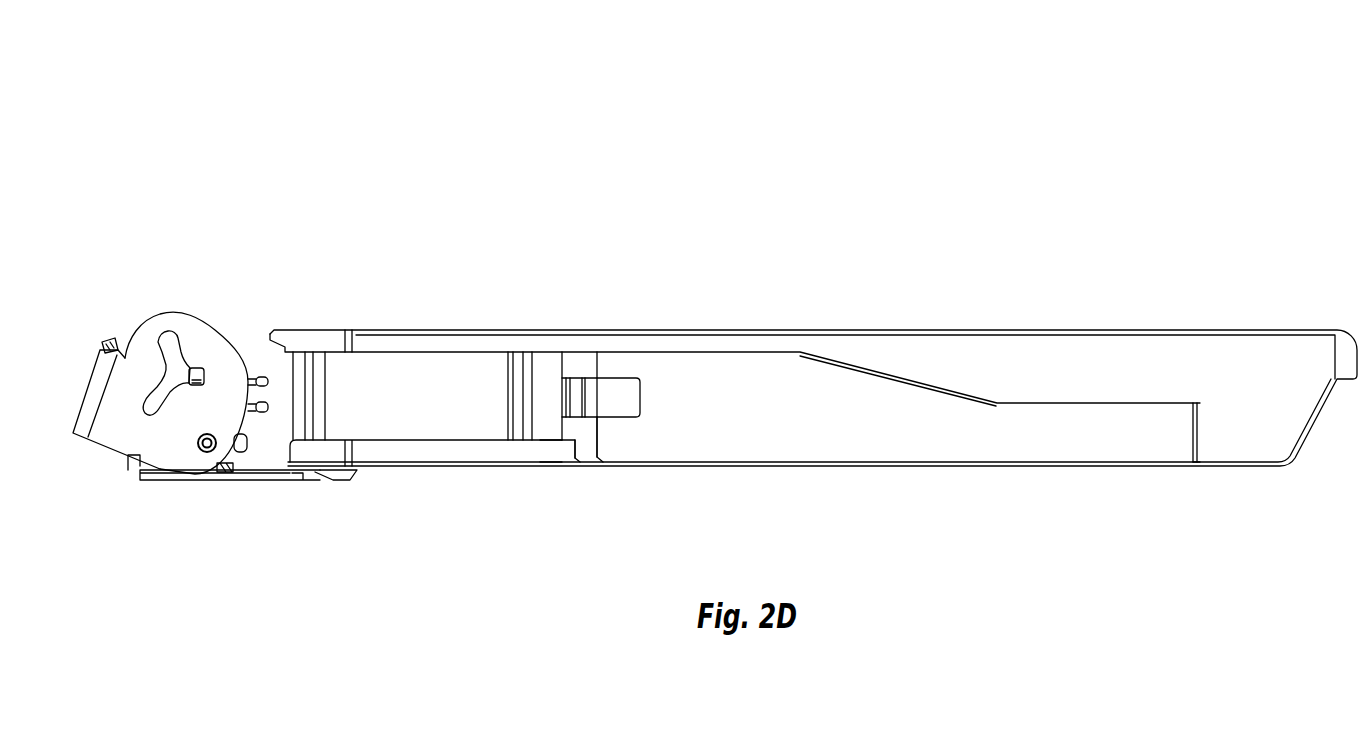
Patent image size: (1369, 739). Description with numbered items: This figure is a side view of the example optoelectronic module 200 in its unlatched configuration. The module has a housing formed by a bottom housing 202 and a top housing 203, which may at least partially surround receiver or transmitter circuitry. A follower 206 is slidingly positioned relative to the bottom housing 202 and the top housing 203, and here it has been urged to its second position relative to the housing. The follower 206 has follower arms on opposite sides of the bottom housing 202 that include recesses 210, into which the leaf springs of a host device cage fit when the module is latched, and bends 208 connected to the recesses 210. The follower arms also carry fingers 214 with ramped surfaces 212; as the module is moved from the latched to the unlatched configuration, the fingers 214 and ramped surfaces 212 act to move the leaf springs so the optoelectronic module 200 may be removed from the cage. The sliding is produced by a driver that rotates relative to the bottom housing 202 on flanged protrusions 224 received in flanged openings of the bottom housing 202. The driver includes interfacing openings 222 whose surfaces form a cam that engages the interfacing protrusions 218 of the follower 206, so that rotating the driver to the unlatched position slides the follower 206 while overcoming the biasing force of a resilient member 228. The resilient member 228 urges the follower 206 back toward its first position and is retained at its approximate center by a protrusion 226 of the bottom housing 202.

The optoelectronic module 200 is at (373, 125).
The bottom housing 202 is at (790, 408).
The top housing 203 is at (1277, 408).
The follower 206 is at (463, 408).
The bends 208 is at (517, 382).
The recesses 210 is at (547, 420).
The ramped surfaces 212 is at (578, 390).
The fingers 214 is at (579, 418).
The interfacing protrusions 218 is at (199, 370).
The interfacing openings 222 is at (163, 352).
The flanged protrusions 224 is at (201, 447).
The protrusion 226 is at (359, 481).
The resilient member 228 is at (318, 473).